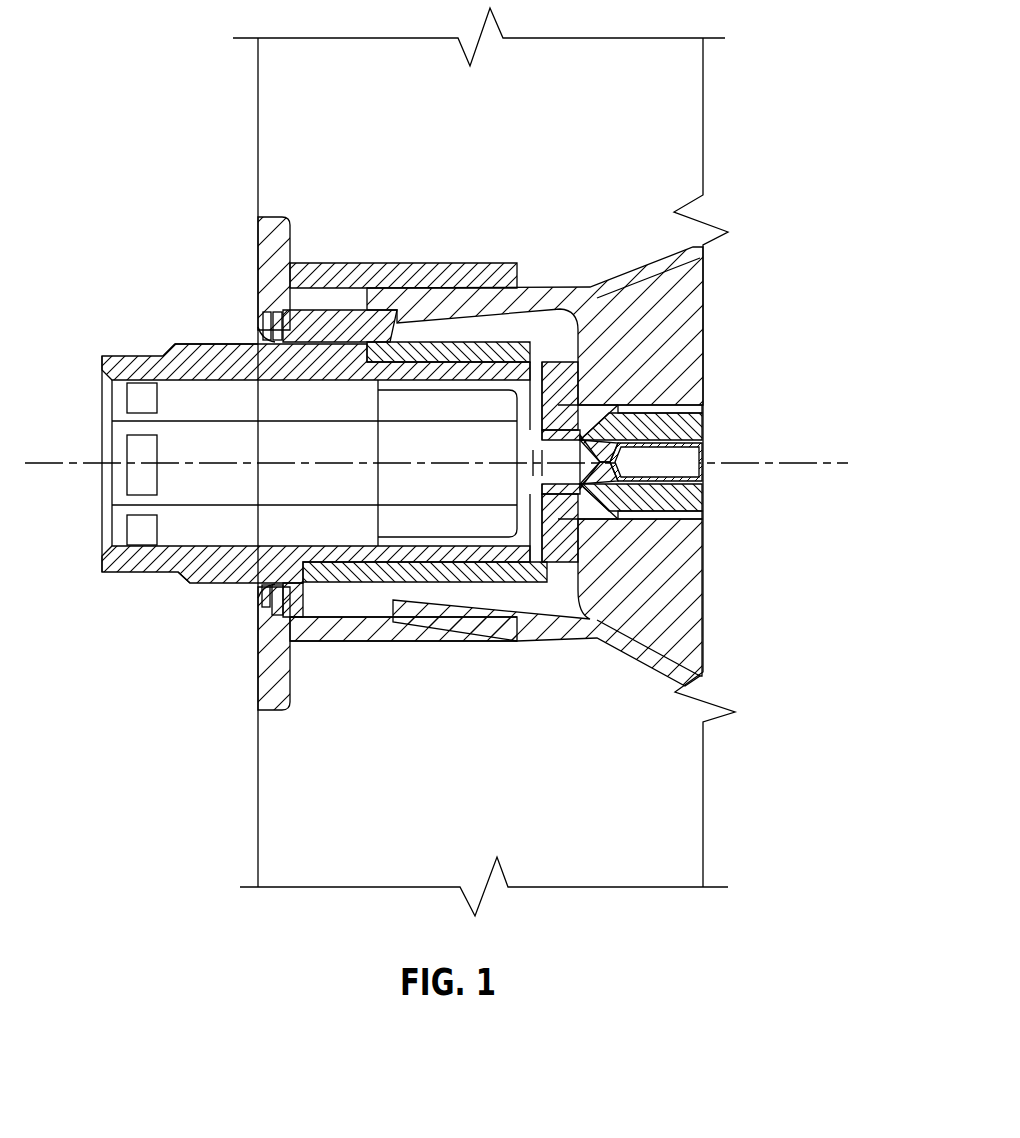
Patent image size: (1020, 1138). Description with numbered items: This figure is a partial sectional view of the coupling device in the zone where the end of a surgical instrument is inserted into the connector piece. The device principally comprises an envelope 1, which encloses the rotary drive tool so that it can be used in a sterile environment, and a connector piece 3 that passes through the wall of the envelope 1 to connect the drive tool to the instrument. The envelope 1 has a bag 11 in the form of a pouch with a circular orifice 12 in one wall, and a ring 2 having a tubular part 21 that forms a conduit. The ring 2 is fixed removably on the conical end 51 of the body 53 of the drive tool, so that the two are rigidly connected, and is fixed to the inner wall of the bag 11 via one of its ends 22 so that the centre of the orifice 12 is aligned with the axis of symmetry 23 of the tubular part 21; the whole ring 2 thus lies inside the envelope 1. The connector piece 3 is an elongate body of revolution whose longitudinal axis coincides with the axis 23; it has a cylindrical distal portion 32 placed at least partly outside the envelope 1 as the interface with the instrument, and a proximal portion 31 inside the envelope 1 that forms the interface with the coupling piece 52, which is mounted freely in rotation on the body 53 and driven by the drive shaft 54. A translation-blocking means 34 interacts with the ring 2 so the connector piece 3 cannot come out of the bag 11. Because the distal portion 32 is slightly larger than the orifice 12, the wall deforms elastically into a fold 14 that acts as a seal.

The envelope 1 is at (386, 135).
The bag 11 is at (257, 84).
The circular orifice 12 is at (224, 334).
The fold 14 is at (246, 600).
The ring 2 is at (316, 262).
The tubular part 21 is at (440, 262).
The end of the ring 22 is at (297, 700).
The axis of symmetry 23 is at (814, 463).
The connector piece 3 is at (126, 575).
The proximal portion 31 is at (428, 620).
The cylindrical distal portion 32 is at (214, 586).
The translation-blocking means 34 is at (320, 613).
The conical end 51 is at (572, 638).
The coupling piece 52 is at (512, 348).
The body 53 is at (693, 303).
The drive shaft 54 is at (700, 440).